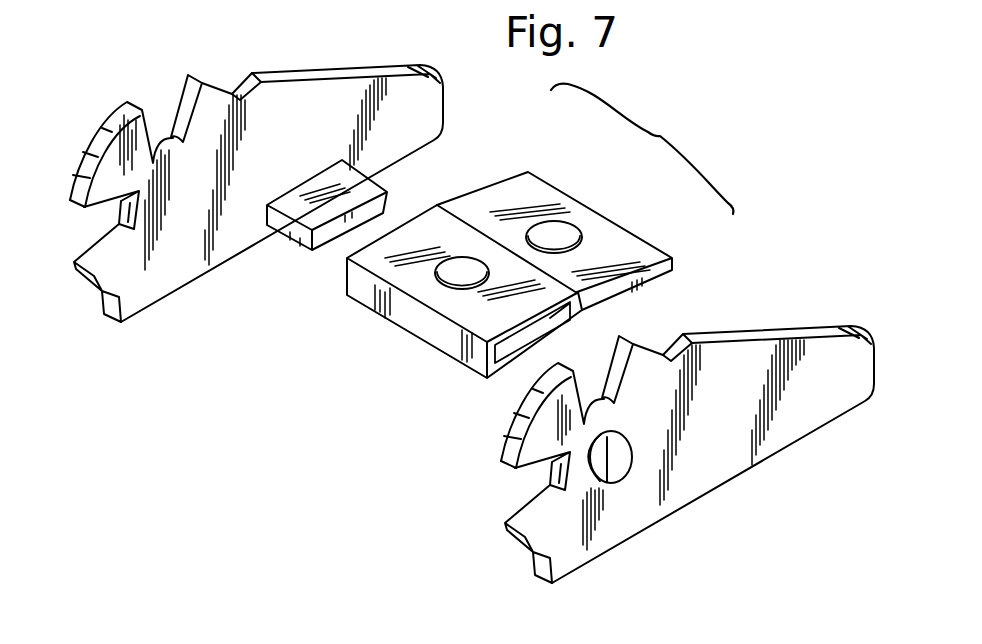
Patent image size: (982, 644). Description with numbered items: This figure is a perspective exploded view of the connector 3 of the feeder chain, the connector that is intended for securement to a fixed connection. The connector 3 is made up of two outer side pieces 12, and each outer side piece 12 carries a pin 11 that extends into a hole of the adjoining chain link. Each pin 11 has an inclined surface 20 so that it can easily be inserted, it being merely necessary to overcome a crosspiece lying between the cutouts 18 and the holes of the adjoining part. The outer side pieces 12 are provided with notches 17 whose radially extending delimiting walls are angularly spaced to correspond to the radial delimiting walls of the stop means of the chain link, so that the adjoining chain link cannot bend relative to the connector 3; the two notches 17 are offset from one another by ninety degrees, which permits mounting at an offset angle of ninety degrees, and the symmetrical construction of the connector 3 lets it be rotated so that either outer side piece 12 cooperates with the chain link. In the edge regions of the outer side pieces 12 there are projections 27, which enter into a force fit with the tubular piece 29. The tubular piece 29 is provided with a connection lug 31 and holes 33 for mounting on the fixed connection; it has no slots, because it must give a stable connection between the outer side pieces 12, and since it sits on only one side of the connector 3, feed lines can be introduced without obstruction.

The connector 3 is at (315, 352).
The pins 11 is at (623, 458).
The outer side pieces 12 is at (687, 448).
The notches 17 is at (157, 127).
The cutouts 18 is at (337, 636).
The inclined surface 20 is at (602, 477).
The projections 27 is at (312, 215).
The tubular piece 29 is at (468, 317).
The connection lug 31 is at (637, 252).
The holes 33 is at (457, 268).